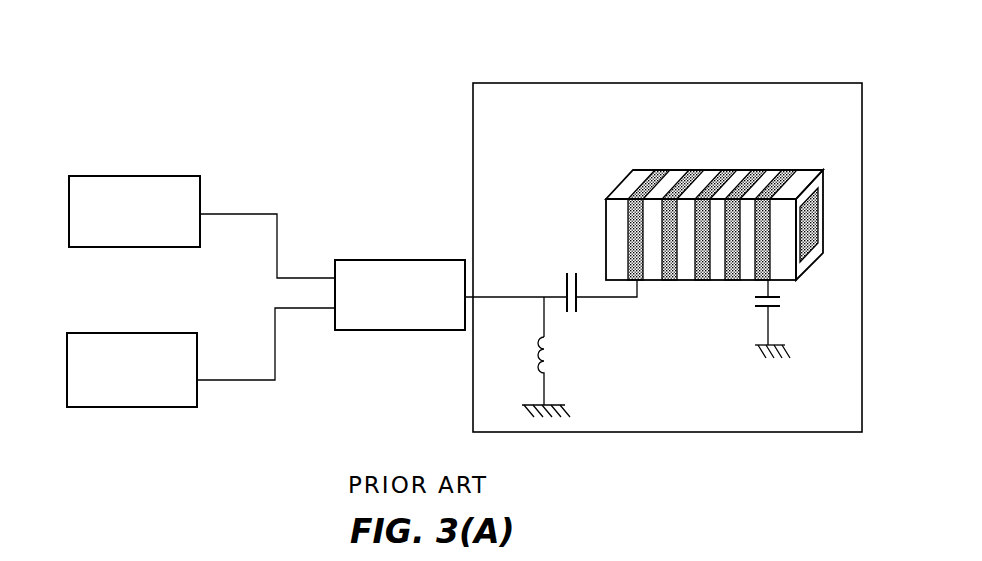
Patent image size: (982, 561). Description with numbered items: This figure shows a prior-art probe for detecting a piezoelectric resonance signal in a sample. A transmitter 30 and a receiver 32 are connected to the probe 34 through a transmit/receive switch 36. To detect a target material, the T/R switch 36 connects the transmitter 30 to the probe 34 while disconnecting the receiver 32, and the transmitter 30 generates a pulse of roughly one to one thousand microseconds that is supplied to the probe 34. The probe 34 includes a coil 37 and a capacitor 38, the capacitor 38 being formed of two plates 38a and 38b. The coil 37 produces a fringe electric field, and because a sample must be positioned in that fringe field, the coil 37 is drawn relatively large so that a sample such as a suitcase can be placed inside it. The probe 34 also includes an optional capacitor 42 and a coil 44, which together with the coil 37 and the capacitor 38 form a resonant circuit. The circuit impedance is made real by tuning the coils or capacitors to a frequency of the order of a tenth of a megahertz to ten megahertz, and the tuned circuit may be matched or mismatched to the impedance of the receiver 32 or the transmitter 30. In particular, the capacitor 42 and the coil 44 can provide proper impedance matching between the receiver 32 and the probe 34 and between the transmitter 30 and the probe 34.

The transmitter 30 is at (140, 333).
The receiver 32 is at (130, 176).
The probe 34 is at (782, 83).
The transmit/receive (T/R) switch 36 is at (405, 260).
The coil 37 is at (797, 171).
The capacitor 38 is at (762, 319).
The plate 38a is at (757, 297).
The plate 38b is at (757, 308).
The capacitor 42 is at (579, 311).
The coil 44 is at (552, 357).